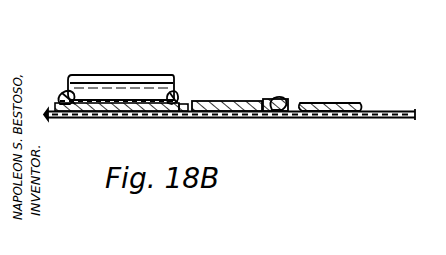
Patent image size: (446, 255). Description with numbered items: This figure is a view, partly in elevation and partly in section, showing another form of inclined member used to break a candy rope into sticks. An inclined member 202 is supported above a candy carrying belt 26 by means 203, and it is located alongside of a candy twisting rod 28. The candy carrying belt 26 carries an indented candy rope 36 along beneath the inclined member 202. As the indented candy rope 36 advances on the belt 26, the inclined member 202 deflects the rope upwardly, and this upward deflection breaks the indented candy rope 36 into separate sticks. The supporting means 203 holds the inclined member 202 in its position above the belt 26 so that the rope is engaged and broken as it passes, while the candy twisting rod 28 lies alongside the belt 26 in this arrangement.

The candy carrying belt 26 is at (161, 117).
The candy twisting rod 28 is at (128, 84).
The indented candy rope 36 is at (56, 102).
The inclined member 202 is at (273, 118).
The means 203 is at (244, 118).